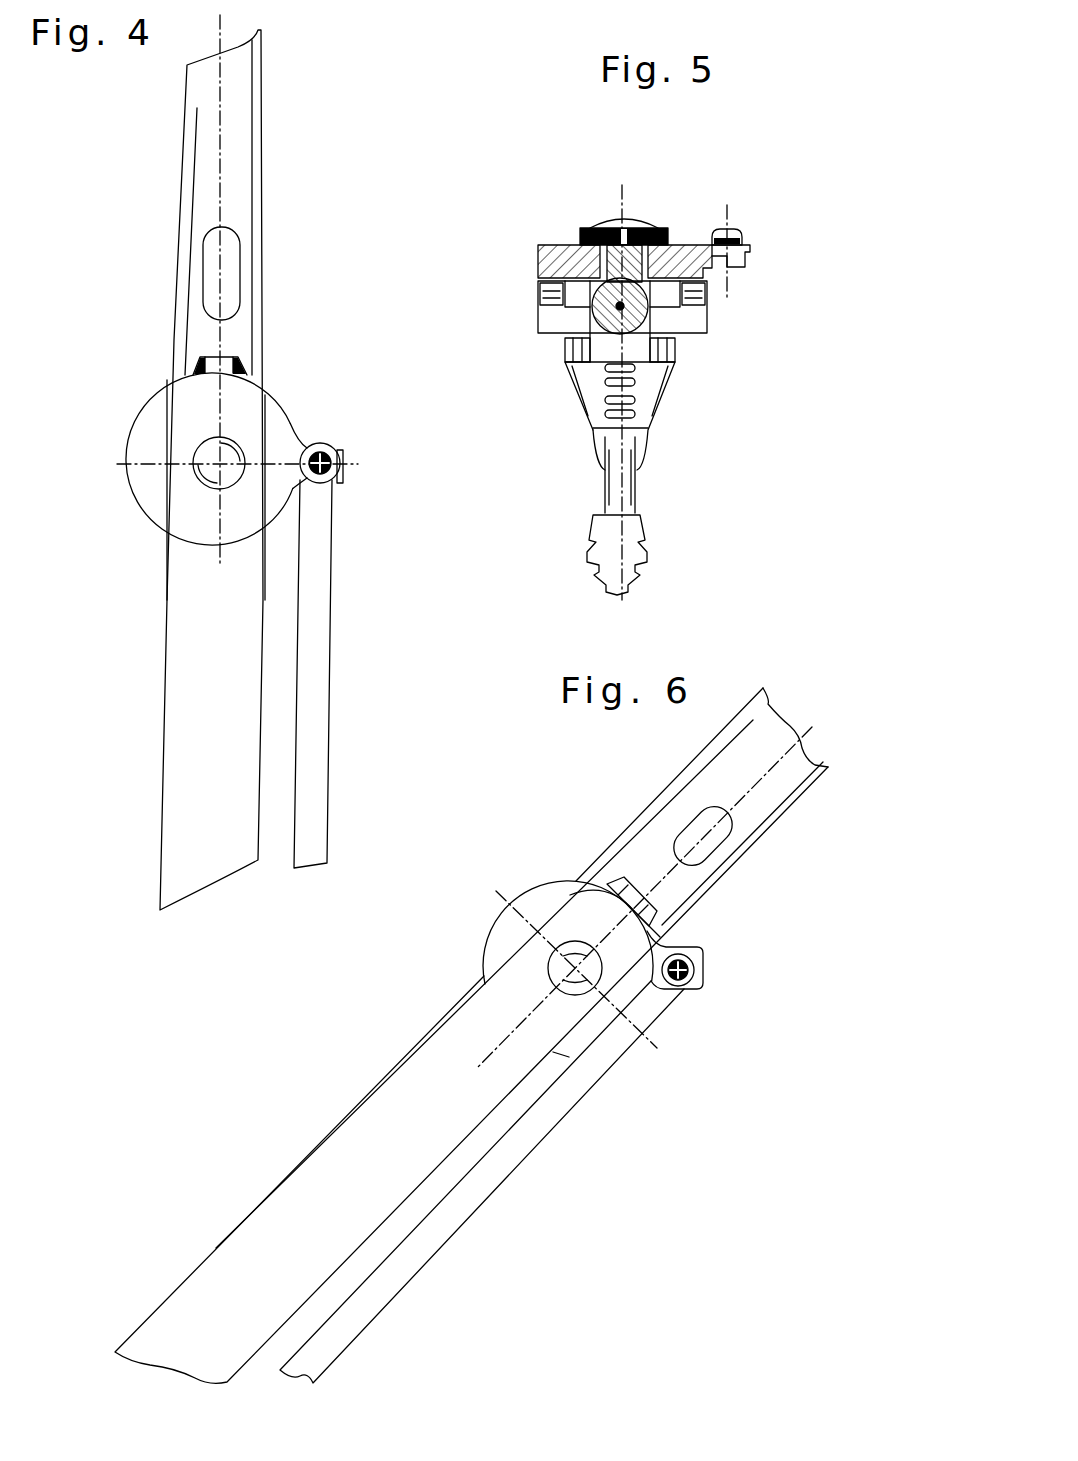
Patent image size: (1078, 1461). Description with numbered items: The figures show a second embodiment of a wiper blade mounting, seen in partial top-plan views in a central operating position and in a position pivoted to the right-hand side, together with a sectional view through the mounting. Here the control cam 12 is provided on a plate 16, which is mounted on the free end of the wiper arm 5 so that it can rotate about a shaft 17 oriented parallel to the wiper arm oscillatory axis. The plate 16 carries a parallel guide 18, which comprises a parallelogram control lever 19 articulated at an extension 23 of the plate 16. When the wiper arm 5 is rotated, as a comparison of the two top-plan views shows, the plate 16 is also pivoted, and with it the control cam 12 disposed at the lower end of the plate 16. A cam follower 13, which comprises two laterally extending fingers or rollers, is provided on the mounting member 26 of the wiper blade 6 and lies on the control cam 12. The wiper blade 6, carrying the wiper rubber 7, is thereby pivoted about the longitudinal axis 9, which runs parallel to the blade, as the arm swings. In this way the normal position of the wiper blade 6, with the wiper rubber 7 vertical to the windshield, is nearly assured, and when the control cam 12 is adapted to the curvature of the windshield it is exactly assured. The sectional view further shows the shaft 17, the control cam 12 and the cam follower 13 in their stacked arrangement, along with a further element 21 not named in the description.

In FIG. 4, the wiper arm 5 is at (180, 685).
In FIG. 5, the wiper arm 5 is at (652, 233).
In FIG. 6, the wiper arm 5 is at (368, 1140).
In FIG. 4, the wiper blade 6 is at (197, 225).
In FIG. 6, the wiper blade 6 is at (760, 798).
In FIG. 5, the wiper rubber 7 is at (590, 557).
In FIG. 4, the longitudinal axis 9 is at (220, 515).
In FIG. 5, the longitudinal axis 9 is at (595, 290).
In FIG. 6, the longitudinal axis 9 is at (527, 1017).
In FIG. 5, the control cam 12 is at (547, 297).
In FIG. 5, the cam follower 13 is at (717, 333).
In FIG. 5, the plate 16 is at (545, 268).
In FIG. 6, the plate 16 is at (556, 893).
In FIG. 4, the shaft 17 is at (217, 462).
In FIG. 5, the shaft 17 is at (622, 213).
In FIG. 6, the shaft 17 is at (578, 970).
In FIG. 4, the parallel guide 18 is at (290, 390).
In FIG. 6, the parallel guide 18 is at (675, 938).
In FIG. 4, the parallelogram control lever 19 is at (316, 563).
In FIG. 5, the parallelogram control lever 19 is at (740, 233).
In FIG. 6, the parallelogram control lever 19 is at (532, 1123).
In FIG. 4, the nut 21 is at (141, 464).
In FIG. 5, the nut 21 is at (677, 352).
In FIG. 6, the nut 21 is at (503, 886).
In FIG. 4, the extension 23 is at (340, 450).
In FIG. 5, the extension 23 is at (750, 253).
In FIG. 6, the extension 23 is at (703, 972).
In FIG. 5, the mounting member 26 is at (570, 350).